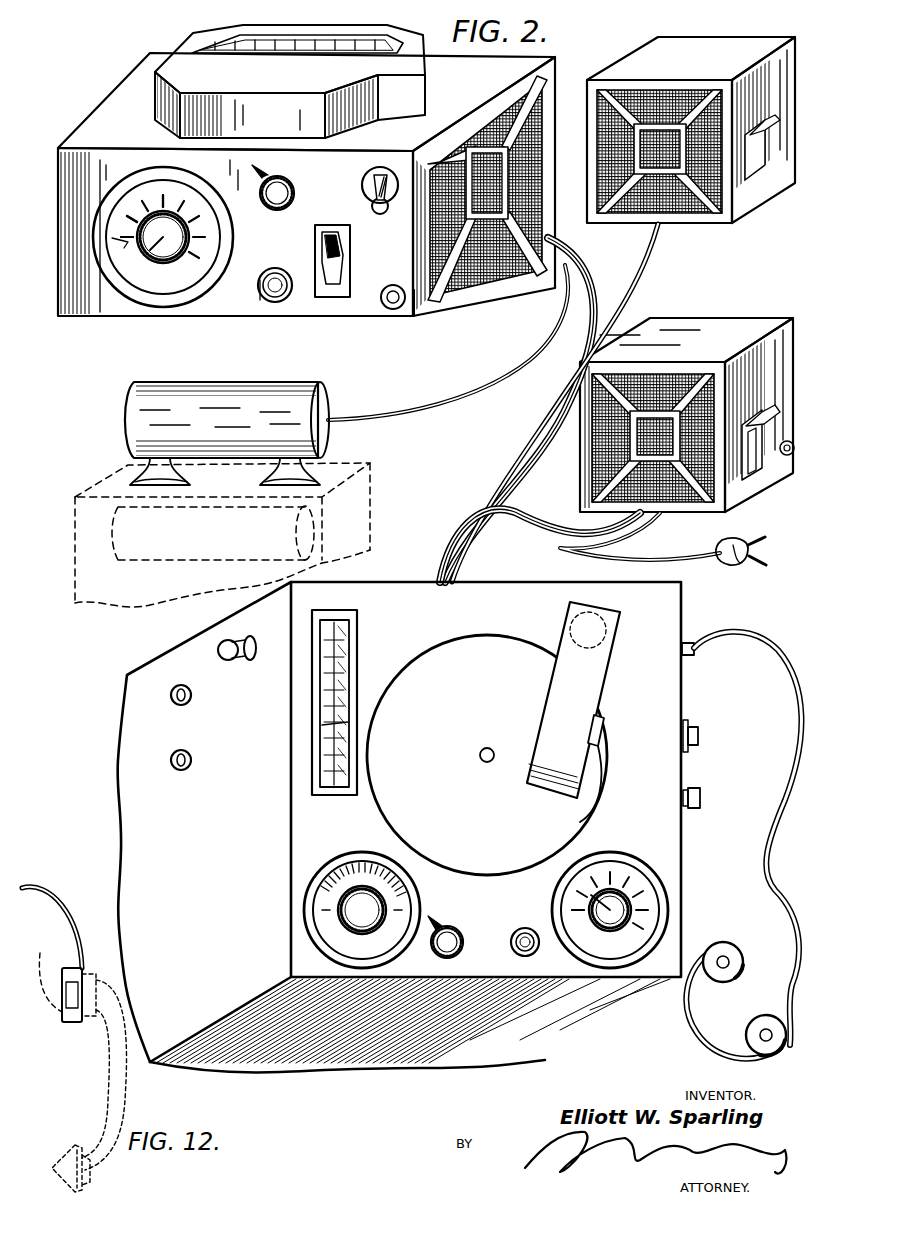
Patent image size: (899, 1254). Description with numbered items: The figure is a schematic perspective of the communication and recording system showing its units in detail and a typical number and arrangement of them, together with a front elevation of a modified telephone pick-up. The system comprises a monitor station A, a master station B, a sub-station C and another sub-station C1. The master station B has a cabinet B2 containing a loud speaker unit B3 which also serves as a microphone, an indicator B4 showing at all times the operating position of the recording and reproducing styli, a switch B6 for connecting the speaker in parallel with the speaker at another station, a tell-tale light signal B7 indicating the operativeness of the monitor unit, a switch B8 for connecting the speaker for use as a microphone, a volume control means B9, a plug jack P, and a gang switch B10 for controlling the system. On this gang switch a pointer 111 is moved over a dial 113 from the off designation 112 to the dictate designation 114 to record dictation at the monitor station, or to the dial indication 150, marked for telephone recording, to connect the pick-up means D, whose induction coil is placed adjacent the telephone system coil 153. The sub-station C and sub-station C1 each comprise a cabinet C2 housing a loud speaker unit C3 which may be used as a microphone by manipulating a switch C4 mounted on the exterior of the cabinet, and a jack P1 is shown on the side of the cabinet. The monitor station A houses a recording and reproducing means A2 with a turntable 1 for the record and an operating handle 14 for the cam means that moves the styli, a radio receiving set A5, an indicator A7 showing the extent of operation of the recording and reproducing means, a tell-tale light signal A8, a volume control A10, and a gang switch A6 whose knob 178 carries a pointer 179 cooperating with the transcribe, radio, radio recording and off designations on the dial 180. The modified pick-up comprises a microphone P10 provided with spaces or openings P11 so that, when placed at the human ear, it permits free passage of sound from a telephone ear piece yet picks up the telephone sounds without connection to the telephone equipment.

In FIG. 2, the master station B is at (134, 63).
In FIG. 2, the indicator B4 is at (282, 60).
In FIG. 2, the gang switch B10 is at (152, 262).
In FIG. 2, the volume control means B9 is at (290, 185).
In FIG. 2, the tell-tale light signal B7 is at (269, 278).
In FIG. 2, the switch B6 is at (368, 186).
In FIG. 2, the switch B8 is at (350, 263).
In FIG. 2, the loud speaker unit B3 is at (478, 222).
In FIG. 2, the cabinet B2 is at (378, 305).
In FIG. 2, the plug jack P is at (398, 306).
In FIG. 2, the dial indication 150 is at (150, 205).
In FIG. 2, the dictate designation 114 is at (120, 216).
In FIG. 2, the off designation 112 is at (108, 236).
In FIG. 2, the pointer 111 is at (158, 225).
In FIG. 2, the dial 113 is at (130, 283).
In FIG. 2, the sub-station C1 is at (702, 218).
In FIG. 2, the sub-station C is at (738, 335).
In FIG. 2, the cabinet C2 is at (584, 425).
In FIG. 2, the loud speaker unit C3 is at (664, 412).
In FIG. 2, the switch C4 is at (760, 445).
In FIG. 2, the jack P1 is at (790, 442).
In FIG. 2, the pick-up means D is at (292, 410).
In FIG. 2, the telephone system coil 153 is at (150, 545).
In FIG. 2, the monitor station A is at (305, 836).
In FIG. 2, the indicator A7 is at (358, 628).
In FIG. 2, the recording and reproducing means A2 is at (552, 734).
In FIG. 2, the operating handle 14 is at (605, 720).
In FIG. 2, the turntable 1 is at (570, 810).
In FIG. 2, the radio receiving set A5 is at (330, 928).
In FIG. 2, the volume control A10 is at (450, 925).
In FIG. 2, the tell-tale light signal A8 is at (511, 943).
In FIG. 2, the gang switch A6 is at (660, 912).
In FIG. 2, the pointer 179 is at (598, 920).
In FIG. 2, the dial 180 is at (578, 930).
In FIG. 2, the knob 178 is at (607, 922).
In FIG. 12, the spaces or openings P11 is at (52, 949).
In FIG. 12, the microphone P10 is at (76, 1022).